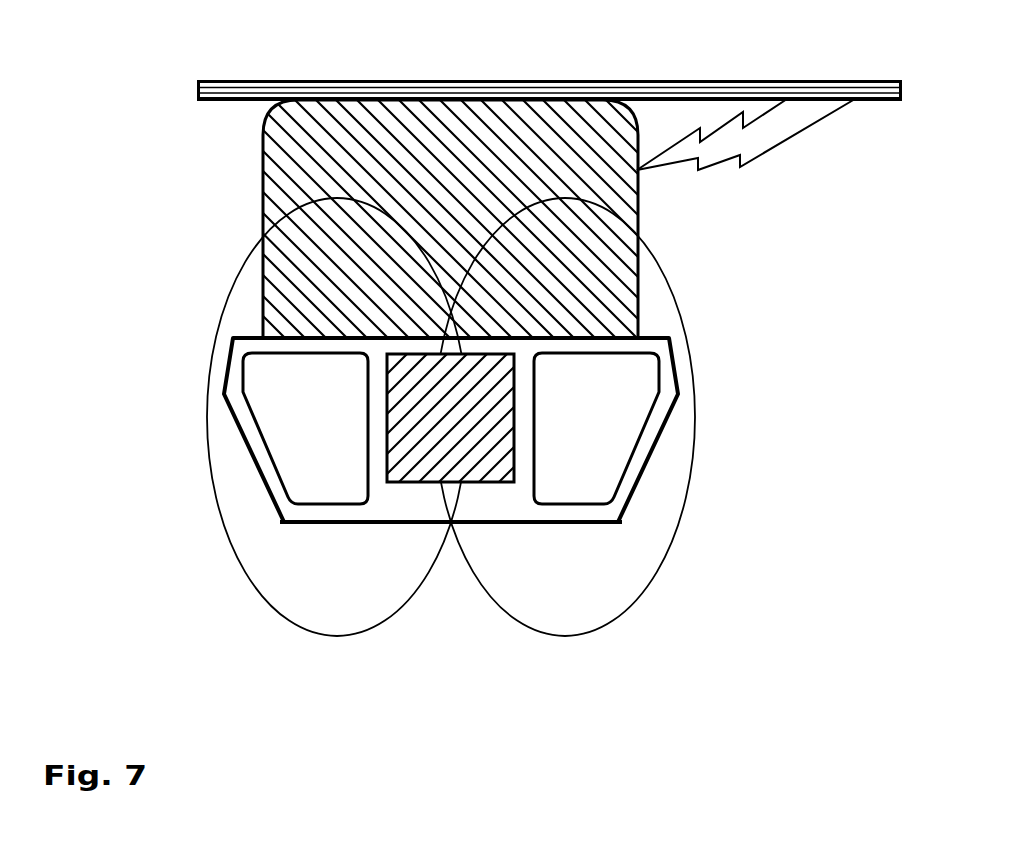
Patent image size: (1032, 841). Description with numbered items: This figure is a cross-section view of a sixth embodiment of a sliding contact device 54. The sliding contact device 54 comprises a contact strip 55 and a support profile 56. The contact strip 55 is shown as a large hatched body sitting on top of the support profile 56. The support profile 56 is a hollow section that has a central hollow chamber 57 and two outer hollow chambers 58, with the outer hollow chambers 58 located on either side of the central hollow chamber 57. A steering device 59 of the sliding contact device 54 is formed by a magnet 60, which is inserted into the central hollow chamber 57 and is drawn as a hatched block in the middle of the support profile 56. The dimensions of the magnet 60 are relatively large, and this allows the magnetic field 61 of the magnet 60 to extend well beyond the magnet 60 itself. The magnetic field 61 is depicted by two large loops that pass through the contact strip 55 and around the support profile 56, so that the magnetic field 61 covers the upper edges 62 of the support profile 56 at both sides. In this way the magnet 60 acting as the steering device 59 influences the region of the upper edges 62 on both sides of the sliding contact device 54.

The sliding contact device 54 is at (168, 327).
The contact strip 55 is at (430, 128).
The support profile 56 is at (515, 505).
The central hollow chamber 57 is at (406, 485).
The outer hollow chambers 58 is at (265, 392).
The steering device 59 is at (537, 573).
The magnet 60 is at (412, 440).
The magnetic field 61 is at (600, 592).
The upper edges 62 is at (655, 330).